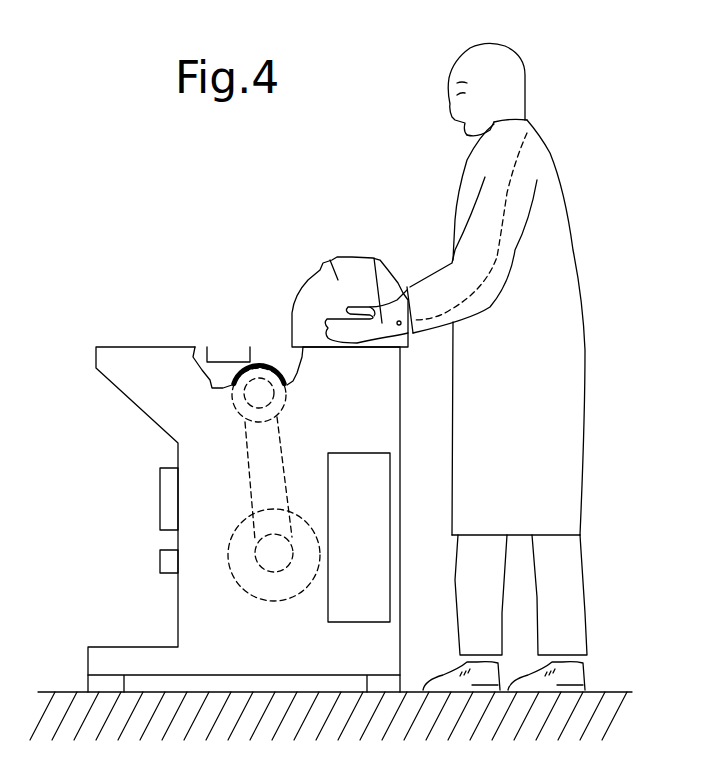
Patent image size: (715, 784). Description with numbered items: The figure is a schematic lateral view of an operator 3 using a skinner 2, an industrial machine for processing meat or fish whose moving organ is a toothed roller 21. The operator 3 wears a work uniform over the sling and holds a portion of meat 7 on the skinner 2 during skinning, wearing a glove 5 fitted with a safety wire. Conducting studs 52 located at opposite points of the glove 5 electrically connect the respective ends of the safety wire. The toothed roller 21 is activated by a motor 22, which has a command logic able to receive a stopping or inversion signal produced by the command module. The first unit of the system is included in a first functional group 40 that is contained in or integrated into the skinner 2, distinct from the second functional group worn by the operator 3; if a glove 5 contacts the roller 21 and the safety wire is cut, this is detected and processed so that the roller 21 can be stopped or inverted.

The skinner 2 is at (117, 428).
The operator 3 is at (597, 107).
The glove 5 is at (374, 258).
The portion of meat 7 is at (338, 260).
The toothed roller 21 is at (258, 362).
The motor 22 is at (287, 587).
The first functional group 40 is at (352, 483).
The conducting stud 52 is at (410, 337).